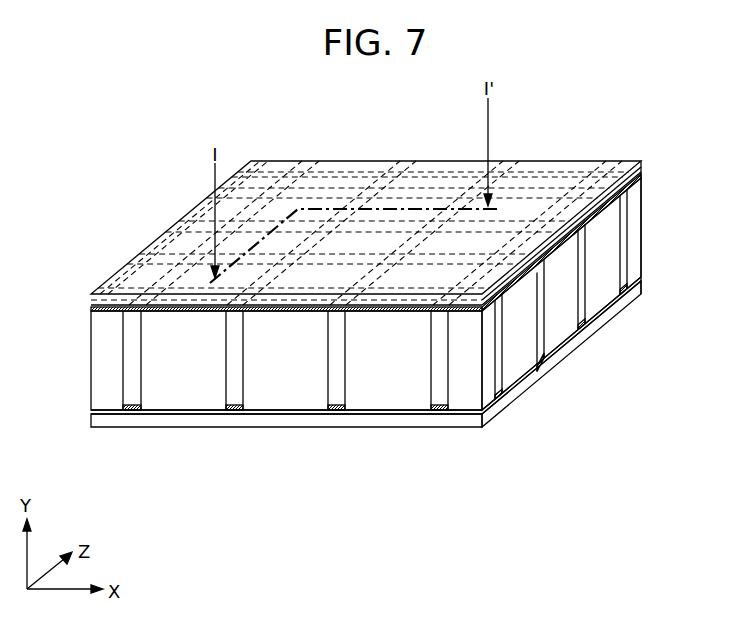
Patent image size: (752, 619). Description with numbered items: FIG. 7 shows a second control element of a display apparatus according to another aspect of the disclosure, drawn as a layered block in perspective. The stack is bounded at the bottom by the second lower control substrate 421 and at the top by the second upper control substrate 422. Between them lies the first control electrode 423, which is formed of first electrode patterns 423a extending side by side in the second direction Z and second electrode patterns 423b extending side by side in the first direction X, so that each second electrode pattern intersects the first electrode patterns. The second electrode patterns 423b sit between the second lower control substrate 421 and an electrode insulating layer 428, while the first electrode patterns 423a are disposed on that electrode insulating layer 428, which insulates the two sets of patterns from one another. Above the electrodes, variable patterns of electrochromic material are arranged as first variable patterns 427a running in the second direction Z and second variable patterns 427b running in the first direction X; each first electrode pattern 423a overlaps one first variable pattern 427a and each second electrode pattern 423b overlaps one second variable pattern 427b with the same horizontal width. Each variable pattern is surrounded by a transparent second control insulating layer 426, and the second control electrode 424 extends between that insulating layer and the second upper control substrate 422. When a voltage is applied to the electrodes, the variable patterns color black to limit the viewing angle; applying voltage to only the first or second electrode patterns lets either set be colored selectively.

The second lower control substrate 421 is at (640, 293).
The second upper control substrate 422 is at (640, 165).
The first control electrode 423 is at (537, 488).
The first electrode patterns 423a is at (440, 411).
The second electrode patterns 423b is at (500, 399).
The second control electrode 424 is at (100, 304).
The second control insulating layer 426 is at (632, 206).
The first variable patterns 427a is at (127, 356).
The second variable patterns 427b is at (618, 238).
The electrode insulating layer 428 is at (92, 413).